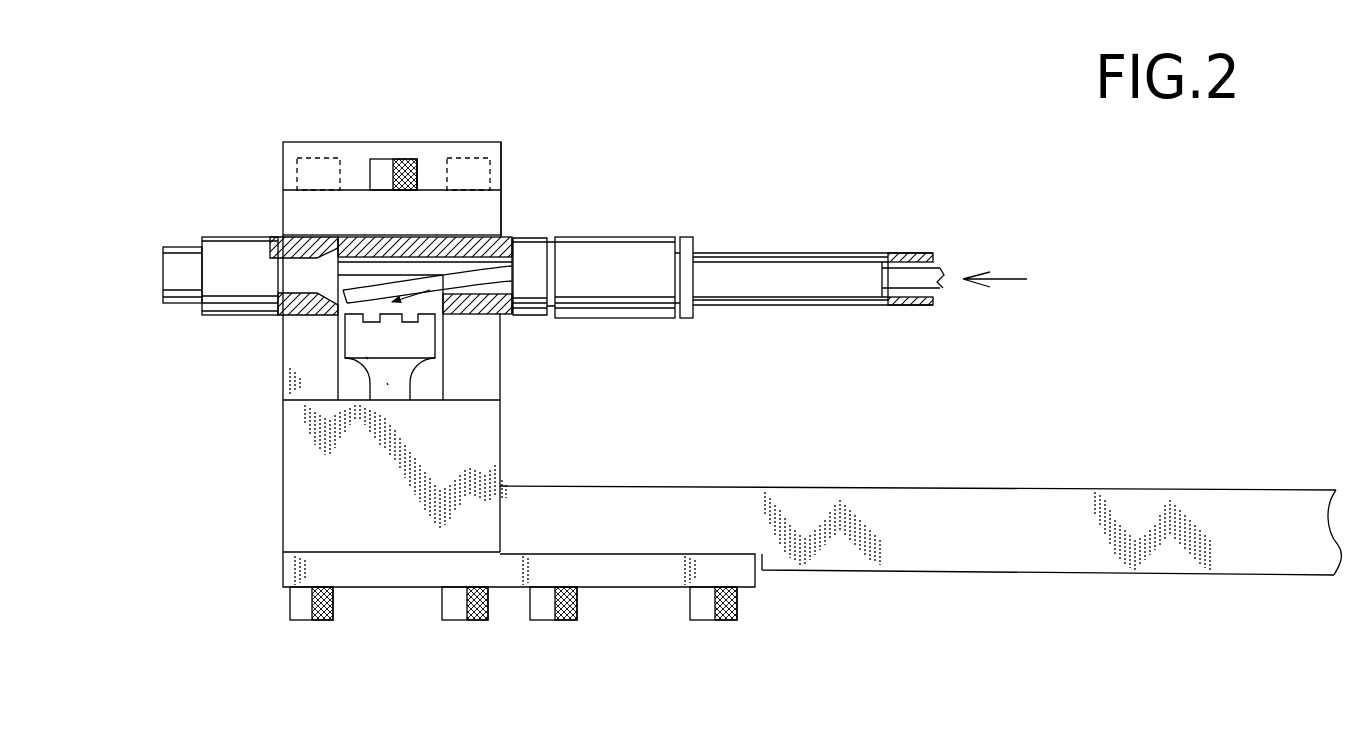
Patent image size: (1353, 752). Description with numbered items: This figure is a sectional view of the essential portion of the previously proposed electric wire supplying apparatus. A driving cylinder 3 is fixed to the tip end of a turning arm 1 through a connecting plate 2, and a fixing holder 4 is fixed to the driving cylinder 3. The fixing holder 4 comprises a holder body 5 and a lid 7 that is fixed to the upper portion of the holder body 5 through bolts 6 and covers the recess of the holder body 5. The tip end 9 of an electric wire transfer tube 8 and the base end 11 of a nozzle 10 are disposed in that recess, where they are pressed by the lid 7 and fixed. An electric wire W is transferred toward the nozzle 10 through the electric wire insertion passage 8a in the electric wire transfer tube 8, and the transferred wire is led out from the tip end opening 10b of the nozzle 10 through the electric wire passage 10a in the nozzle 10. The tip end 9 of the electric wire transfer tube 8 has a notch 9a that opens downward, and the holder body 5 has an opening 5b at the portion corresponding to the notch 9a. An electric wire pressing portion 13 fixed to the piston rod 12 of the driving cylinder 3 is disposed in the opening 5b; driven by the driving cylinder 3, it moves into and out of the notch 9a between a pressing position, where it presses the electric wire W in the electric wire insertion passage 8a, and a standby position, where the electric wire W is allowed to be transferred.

The turning arm 1 is at (975, 545).
The connecting plate 2 is at (620, 570).
The driving cylinder 3 is at (420, 528).
The fixing holder 4 is at (504, 179).
The holder body 5 is at (483, 380).
The opening 5b is at (367, 357).
The bolts 6 is at (318, 158).
The lid 7 is at (430, 160).
The electric wire transfer tube 8 is at (732, 250).
The electric wire insertion passage 8a is at (496, 292).
The tip end of electric wire transfer tube 9 is at (595, 252).
The notch 9a is at (433, 302).
The nozzle 10 is at (204, 269).
The electric wire passage 10a is at (290, 292).
The tip end opening 10b is at (162, 275).
The base end of nozzle 11 is at (247, 247).
The piston rod 12 is at (387, 383).
The electric wire pressing portion 13 is at (422, 340).
The electric wire W is at (938, 282).